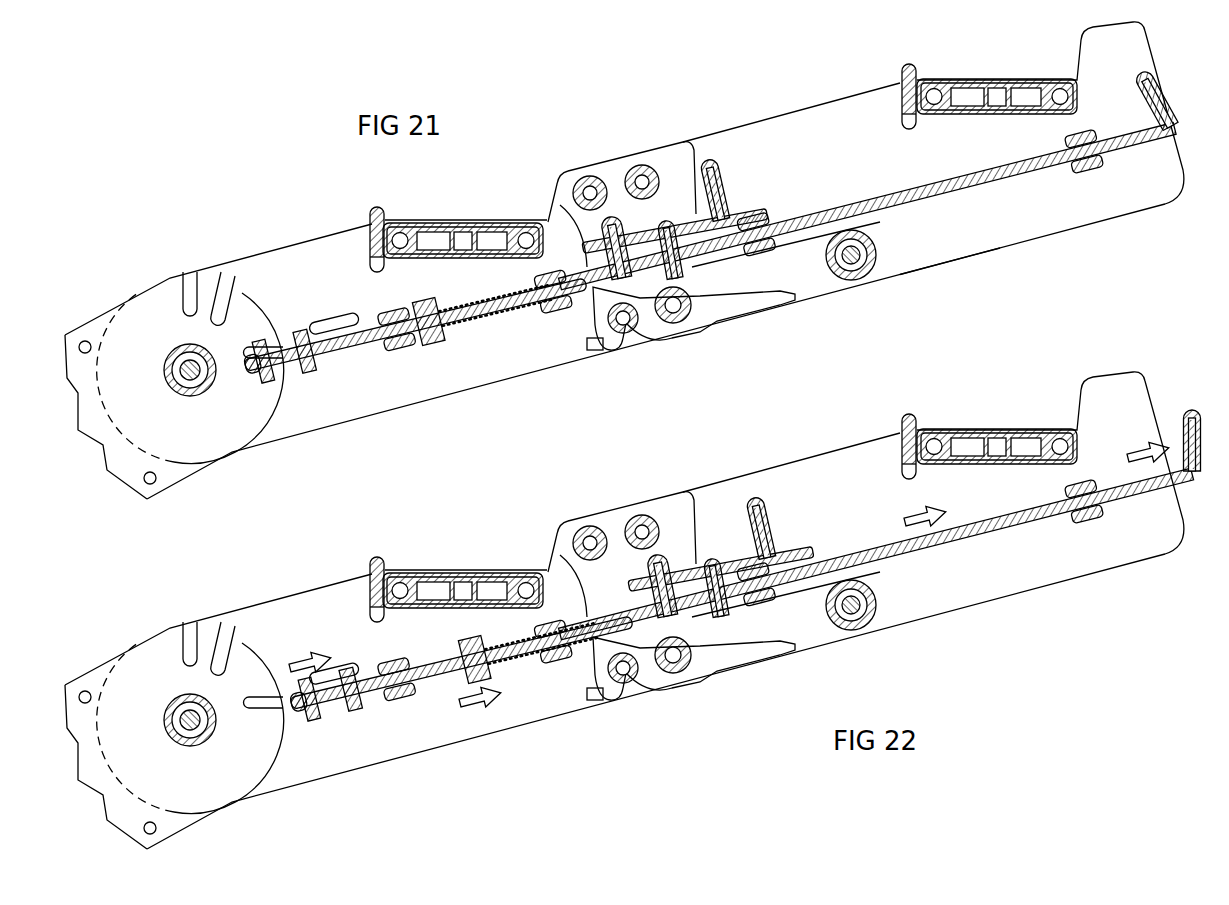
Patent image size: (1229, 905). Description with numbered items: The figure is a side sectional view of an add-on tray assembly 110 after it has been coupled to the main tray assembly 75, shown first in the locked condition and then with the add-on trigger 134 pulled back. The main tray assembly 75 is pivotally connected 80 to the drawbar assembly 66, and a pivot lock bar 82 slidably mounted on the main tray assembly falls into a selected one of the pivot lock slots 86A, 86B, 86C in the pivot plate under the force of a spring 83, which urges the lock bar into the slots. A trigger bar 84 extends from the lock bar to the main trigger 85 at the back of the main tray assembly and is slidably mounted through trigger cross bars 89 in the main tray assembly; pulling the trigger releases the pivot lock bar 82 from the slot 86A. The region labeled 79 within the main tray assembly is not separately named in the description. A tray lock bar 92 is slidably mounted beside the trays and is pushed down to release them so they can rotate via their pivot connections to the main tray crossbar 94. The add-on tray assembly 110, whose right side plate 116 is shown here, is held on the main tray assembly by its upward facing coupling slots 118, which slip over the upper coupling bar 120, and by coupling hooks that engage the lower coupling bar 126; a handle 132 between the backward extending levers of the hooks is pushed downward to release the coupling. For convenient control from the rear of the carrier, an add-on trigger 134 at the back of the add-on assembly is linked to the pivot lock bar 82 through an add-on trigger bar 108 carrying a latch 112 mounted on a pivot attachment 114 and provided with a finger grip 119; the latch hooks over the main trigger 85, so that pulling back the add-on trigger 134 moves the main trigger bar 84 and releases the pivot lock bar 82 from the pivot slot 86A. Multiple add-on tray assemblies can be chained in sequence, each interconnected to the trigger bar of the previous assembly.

In FIG. 21, the drawbar assembly 66 is at (178, 483).
In FIG. 22, the drawbar assembly 66 is at (178, 833).
In FIG. 21, the main tray assembly 75 is at (275, 229).
In FIG. 22, the main tray assembly 75 is at (431, 790).
In FIG. 21, the housing compartment 79 is at (491, 366).
In FIG. 22, the housing compartment 79 is at (304, 632).
In FIG. 21, the pivotal connection 80 is at (172, 378).
In FIG. 22, the pivotal connection 80 is at (172, 728).
In FIG. 21, the pivot lock bar 82 is at (283, 342).
In FIG. 22, the pivot lock bar 82 is at (331, 704).
In FIG. 21, the spring 83 is at (474, 312).
In FIG. 22, the spring 83 is at (520, 652).
In FIG. 21, the trigger bar 84 is at (356, 352).
In FIG. 22, the trigger bar 84 is at (435, 666).
In FIG. 21, the main trigger 85 is at (612, 215).
In FIG. 22, the main trigger 85 is at (663, 556).
In FIG. 21, the pivot lock slot 86A is at (287, 352).
In FIG. 22, the pivot lock slot 86A is at (252, 710).
In FIG. 21, the pivot lock slot 86B is at (226, 280).
In FIG. 22, the pivot lock slot 86B is at (226, 630).
In FIG. 21, the pivot lock slot 86C is at (183, 285).
In FIG. 22, the pivot lock slot 86C is at (183, 635).
In FIG. 21, the trigger cross bars 89 is at (412, 350).
In FIG. 22, the trigger cross bars 89 is at (412, 700).
In FIG. 21, the tray lock bar 92 is at (372, 240).
In FIG. 22, the tray lock bar 92 is at (372, 590).
In FIG. 21, the main tray crossbar 94 is at (402, 262).
In FIG. 22, the main tray crossbar 94 is at (402, 612).
In FIG. 21, the add-on trigger bar 108 is at (988, 182).
In FIG. 21, the add-on tray assembly 110 is at (953, 297).
In FIG. 21, the latch 112 is at (583, 245).
In FIG. 22, the latch 112 is at (632, 590).
In FIG. 21, the pivot attachment 114 is at (666, 220).
In FIG. 22, the pivot attachment 114 is at (718, 612).
In FIG. 21, the right side plate 116 is at (856, 172).
In FIG. 22, the right side plate 116 is at (866, 522).
In FIG. 21, the upward facing coupling slot 118 is at (583, 178).
In FIG. 22, the upward facing coupling slot 118 is at (583, 528).
In FIG. 21, the finger grip 119 is at (712, 162).
In FIG. 22, the finger grip 119 is at (758, 510).
In FIG. 21, the upper coupling bar 120 is at (630, 170).
In FIG. 22, the upper coupling bar 120 is at (630, 520).
In FIG. 21, the lower coupling bar 126 is at (633, 352).
In FIG. 22, the lower coupling bar 126 is at (633, 702).
In FIG. 21, the handle 132 is at (876, 252).
In FIG. 22, the handle 132 is at (876, 602).
In FIG. 21, the add-on trigger 134 is at (1160, 100).
In FIG. 22, the add-on trigger 134 is at (1190, 412).